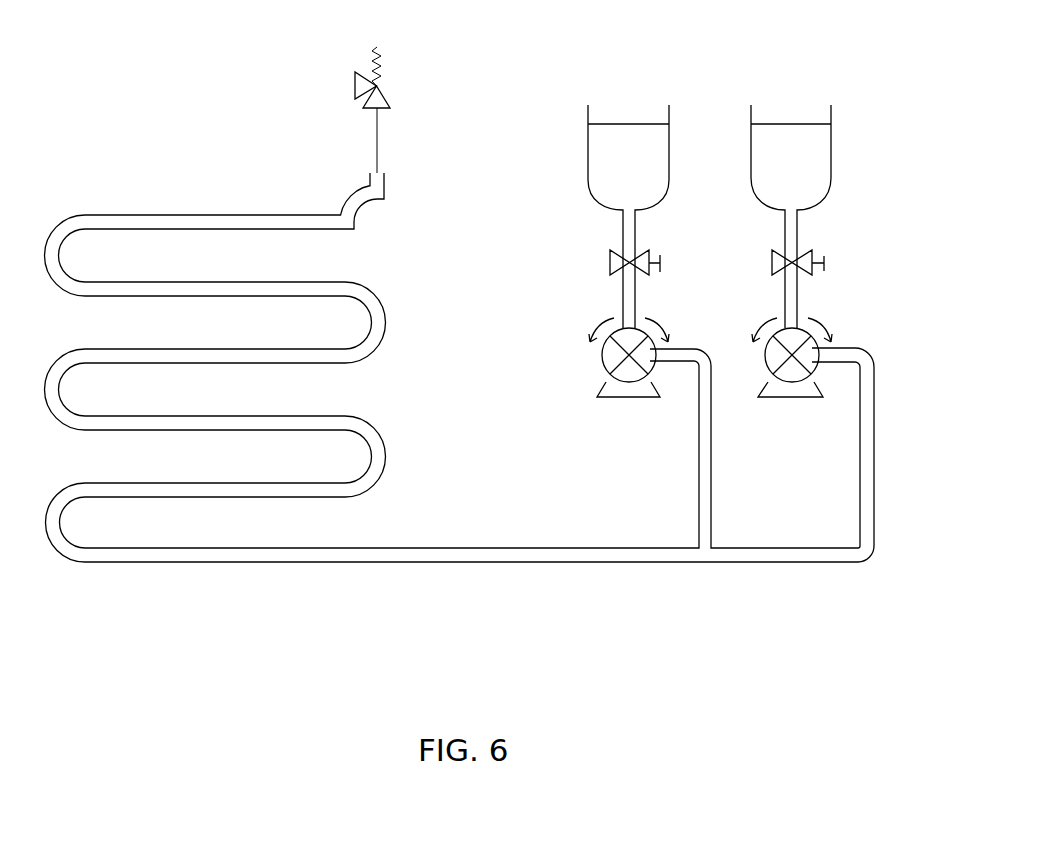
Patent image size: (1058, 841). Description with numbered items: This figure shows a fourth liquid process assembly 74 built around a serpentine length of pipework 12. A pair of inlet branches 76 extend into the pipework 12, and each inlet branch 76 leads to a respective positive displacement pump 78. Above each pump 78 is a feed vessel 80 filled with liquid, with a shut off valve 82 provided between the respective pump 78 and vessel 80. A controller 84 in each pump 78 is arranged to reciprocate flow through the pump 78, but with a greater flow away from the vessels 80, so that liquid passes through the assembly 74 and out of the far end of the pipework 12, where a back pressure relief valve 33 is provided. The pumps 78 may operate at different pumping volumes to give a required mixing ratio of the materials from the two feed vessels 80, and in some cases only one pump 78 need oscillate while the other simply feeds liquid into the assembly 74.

The pipework 12 is at (217, 213).
The back pressure relief valve 33 is at (383, 93).
The fourth assembly 74 is at (245, 627).
The inlet branch 76 is at (865, 505).
The positive displacement pump 78 is at (608, 362).
The feed vessel 80 is at (642, 171).
The shut off valve 82 is at (653, 257).
The controller 84 is at (798, 388).